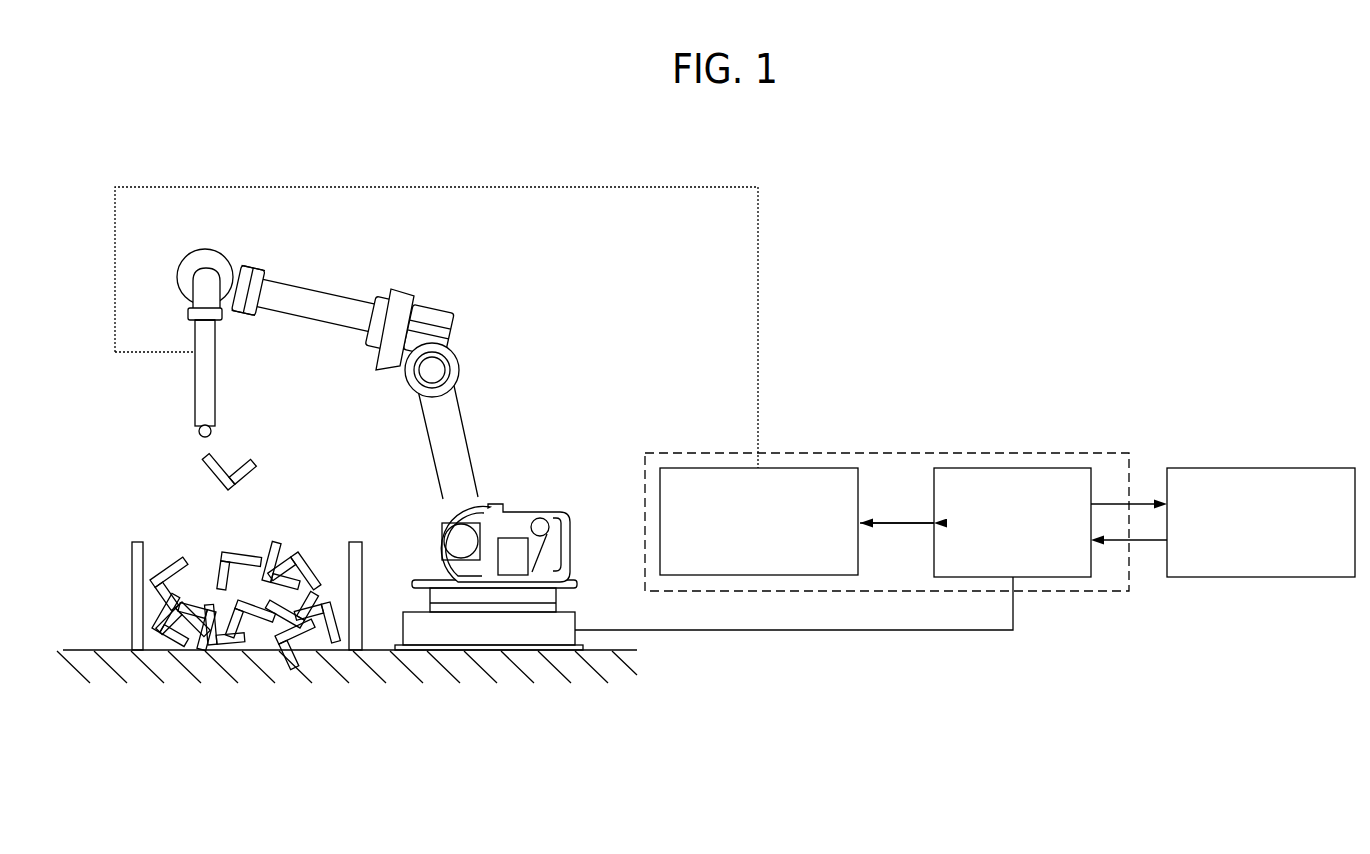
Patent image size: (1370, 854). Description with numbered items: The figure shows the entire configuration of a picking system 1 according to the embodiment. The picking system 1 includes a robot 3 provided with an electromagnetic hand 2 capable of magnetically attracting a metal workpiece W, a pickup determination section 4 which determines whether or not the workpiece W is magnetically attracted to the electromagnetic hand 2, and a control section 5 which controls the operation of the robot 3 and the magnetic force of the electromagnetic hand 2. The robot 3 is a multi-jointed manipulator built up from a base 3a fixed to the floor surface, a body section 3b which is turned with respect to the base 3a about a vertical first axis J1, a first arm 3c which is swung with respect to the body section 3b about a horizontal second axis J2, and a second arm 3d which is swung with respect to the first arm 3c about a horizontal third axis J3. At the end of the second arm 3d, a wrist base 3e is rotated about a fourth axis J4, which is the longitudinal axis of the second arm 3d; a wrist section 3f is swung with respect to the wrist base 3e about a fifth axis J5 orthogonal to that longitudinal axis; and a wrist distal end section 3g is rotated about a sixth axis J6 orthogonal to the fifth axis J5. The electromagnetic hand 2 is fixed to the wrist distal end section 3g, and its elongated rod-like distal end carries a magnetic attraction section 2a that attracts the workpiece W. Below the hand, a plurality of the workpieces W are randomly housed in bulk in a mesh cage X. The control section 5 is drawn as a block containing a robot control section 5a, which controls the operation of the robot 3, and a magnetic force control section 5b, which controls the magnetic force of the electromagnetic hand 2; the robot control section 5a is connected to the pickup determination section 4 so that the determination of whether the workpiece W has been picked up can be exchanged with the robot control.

The picking system 1 is at (985, 156).
The electromagnetic hand 2 is at (216, 387).
The magnetic attraction section 2a is at (199, 430).
The robot 3 is at (520, 357).
The base 3a is at (510, 652).
The body section 3b is at (515, 509).
The first arm 3c is at (462, 418).
The second arm 3d is at (345, 296).
The wrist base 3e is at (238, 279).
The wrist section 3f is at (193, 290).
The wrist distal end section 3g is at (188, 316).
The pickup determination section 4 is at (1275, 466).
The control section 5 is at (1068, 452).
The robot control section 5a is at (995, 466).
The magnetic force control section 5b is at (712, 466).
The first axis J1 is at (576, 569).
The second axis J2 is at (421, 537).
The third axis J3 is at (461, 349).
The fourth axis J4 is at (266, 262).
The fifth axis J5 is at (188, 264).
The sixth axis J6 is at (226, 330).
The workpiece W is at (196, 453).
The mesh cage X is at (132, 578).